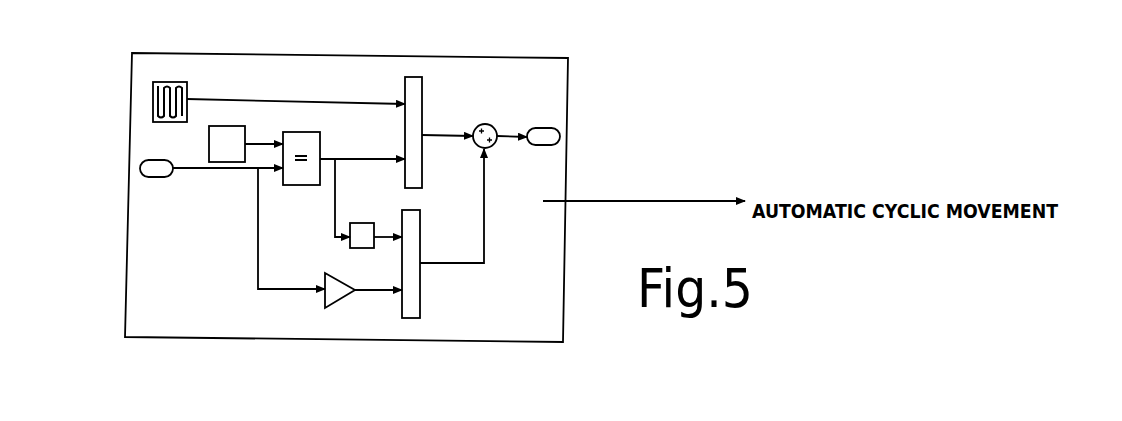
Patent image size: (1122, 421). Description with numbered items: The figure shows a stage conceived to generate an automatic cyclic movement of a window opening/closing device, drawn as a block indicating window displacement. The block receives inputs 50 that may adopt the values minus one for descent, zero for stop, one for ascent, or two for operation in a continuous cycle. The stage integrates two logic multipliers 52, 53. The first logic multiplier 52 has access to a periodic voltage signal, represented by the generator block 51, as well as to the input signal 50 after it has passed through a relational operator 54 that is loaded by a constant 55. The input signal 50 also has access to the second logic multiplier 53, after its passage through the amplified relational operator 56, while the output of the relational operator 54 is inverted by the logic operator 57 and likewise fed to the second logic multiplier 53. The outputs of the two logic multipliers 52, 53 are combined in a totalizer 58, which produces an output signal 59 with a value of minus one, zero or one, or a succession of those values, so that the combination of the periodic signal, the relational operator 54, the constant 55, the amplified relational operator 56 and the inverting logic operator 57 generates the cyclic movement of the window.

The inputs 50 is at (153, 177).
The signal generator 51 is at (153, 99).
The logic multiplier 52 is at (424, 105).
The logic multiplier 53 is at (420, 295).
The relational operator 54 is at (301, 132).
The constant 55 is at (209, 146).
The amplified relational operator 56 is at (340, 302).
The logic operator 57 is at (352, 248).
The totalizer 58 is at (494, 124).
The output signal 59 is at (547, 145).